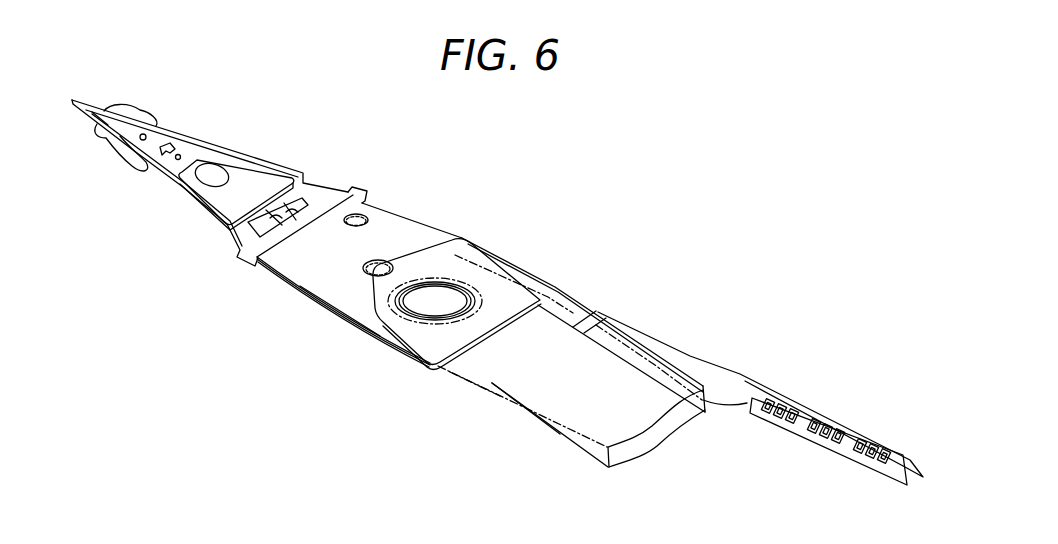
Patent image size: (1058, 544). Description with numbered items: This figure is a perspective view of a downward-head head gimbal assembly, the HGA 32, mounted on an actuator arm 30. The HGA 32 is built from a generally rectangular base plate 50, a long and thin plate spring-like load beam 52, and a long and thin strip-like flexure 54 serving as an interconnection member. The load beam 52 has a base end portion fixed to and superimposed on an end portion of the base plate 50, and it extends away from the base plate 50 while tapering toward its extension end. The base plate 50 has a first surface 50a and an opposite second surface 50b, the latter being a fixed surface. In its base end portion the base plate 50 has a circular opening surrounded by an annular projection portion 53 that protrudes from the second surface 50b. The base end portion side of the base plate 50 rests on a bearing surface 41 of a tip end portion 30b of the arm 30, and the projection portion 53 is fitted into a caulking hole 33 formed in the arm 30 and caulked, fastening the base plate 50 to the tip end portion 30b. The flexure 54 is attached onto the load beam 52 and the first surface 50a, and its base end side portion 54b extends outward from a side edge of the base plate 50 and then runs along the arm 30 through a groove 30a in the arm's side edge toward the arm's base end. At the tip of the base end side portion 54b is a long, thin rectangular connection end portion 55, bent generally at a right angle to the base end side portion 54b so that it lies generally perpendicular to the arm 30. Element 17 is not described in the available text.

The dimple / load point portion 17 is at (129, 160).
The arm 30 is at (549, 402).
The groove 30a is at (465, 305).
The tip end portion 30b is at (461, 372).
The HGA 32 is at (384, 168).
The caulking hole 33 is at (433, 298).
The bearing surface 41 is at (492, 355).
The base plate 50 is at (402, 238).
The first surface 50a is at (350, 325).
The second surface 50b is at (320, 292).
The load beam 52 is at (192, 154).
The projection portion 53 is at (432, 320).
The flexure 54 is at (565, 291).
The base end side portion 54b is at (690, 344).
The connection end portion 55 is at (800, 437).